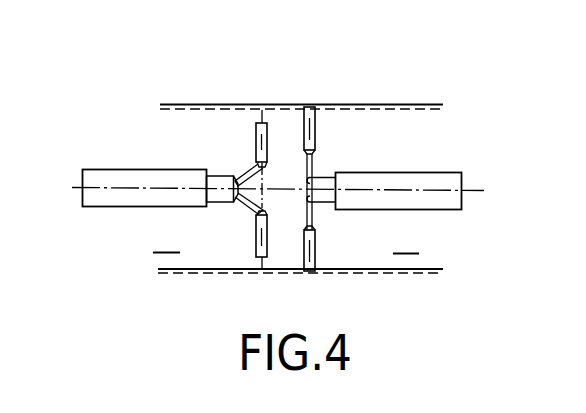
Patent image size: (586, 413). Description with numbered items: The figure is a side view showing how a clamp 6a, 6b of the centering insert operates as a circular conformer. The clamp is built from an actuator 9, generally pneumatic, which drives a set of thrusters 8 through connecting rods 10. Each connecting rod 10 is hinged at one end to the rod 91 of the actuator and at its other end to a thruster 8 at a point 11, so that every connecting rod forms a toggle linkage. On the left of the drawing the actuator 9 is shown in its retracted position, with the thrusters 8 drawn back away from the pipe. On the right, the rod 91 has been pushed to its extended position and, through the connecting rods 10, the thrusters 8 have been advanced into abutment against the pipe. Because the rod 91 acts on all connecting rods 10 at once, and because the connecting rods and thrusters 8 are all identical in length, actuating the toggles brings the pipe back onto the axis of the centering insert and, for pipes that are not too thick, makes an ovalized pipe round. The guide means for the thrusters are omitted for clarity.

The actuator 9 is at (123, 169).
The thrusters 8 is at (255, 142).
The point 11 is at (267, 168).
The connecting rods 10 is at (318, 157).
The rod of the actuator 91 is at (323, 194).
The clamp 6a is at (168, 240).
The clamp 6b is at (408, 241).